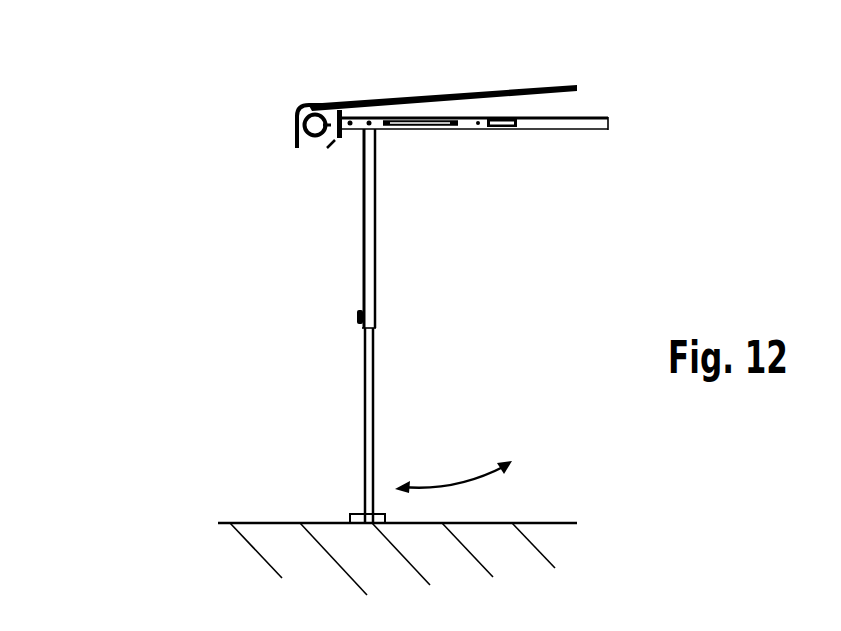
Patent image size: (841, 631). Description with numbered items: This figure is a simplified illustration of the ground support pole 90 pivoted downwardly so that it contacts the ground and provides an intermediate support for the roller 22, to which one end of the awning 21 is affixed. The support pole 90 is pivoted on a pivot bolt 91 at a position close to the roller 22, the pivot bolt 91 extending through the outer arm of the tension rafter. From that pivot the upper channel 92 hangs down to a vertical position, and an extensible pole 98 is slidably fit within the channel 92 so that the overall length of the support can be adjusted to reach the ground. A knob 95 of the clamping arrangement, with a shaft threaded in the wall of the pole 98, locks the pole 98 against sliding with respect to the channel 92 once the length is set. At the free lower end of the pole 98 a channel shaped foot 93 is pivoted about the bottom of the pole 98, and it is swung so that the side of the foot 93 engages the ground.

The awning 21 is at (475, 92).
The roller 22 is at (314, 142).
The pivot bolt 91 is at (350, 102).
The upper channel 92 is at (372, 240).
The knob 95 is at (357, 314).
The extensible pole 98 is at (376, 432).
The channel shaped foot 93 is at (355, 515).
The ground support pole 90 is at (459, 353).